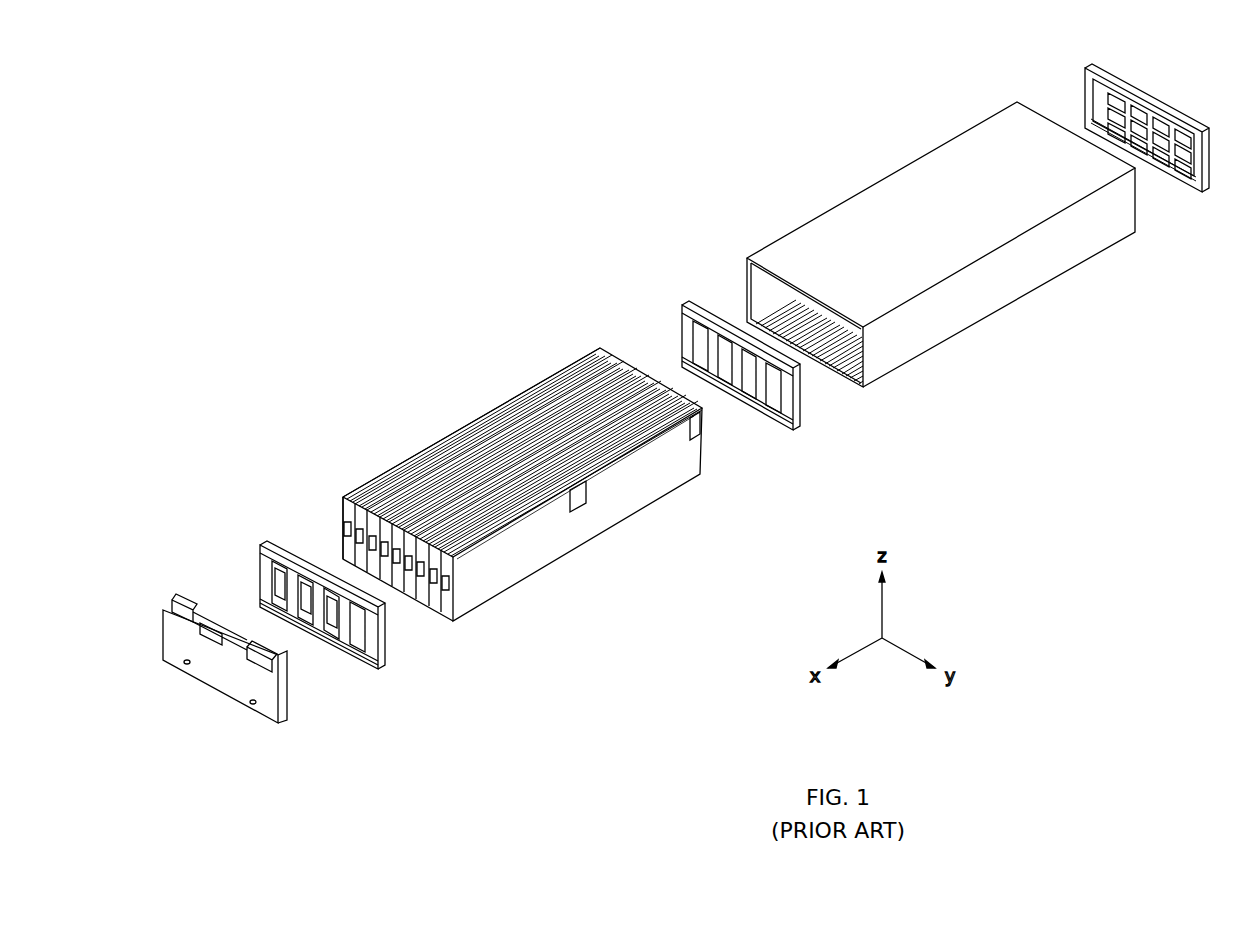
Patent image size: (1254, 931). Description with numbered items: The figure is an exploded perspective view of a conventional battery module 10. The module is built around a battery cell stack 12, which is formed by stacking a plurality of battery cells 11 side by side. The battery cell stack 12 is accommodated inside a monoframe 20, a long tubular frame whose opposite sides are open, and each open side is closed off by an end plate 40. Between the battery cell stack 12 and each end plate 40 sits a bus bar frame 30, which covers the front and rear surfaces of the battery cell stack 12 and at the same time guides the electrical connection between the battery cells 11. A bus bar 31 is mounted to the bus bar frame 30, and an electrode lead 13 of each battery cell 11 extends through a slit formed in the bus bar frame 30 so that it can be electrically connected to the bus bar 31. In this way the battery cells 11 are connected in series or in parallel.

The battery module 10 is at (576, 183).
The battery cell 11 is at (555, 540).
The battery cell stack 12 is at (705, 496).
The electrode lead 13 is at (410, 608).
The monoframe 20 is at (907, 190).
The bus bar frame 30 is at (797, 408).
The bus bar 31 is at (323, 625).
The end plate 40 is at (1140, 95).